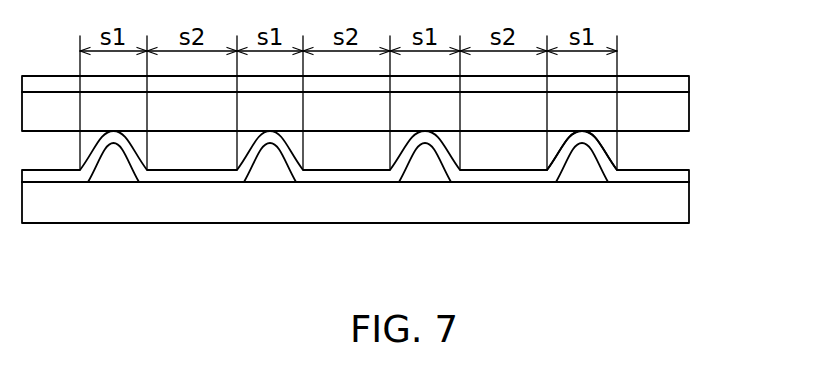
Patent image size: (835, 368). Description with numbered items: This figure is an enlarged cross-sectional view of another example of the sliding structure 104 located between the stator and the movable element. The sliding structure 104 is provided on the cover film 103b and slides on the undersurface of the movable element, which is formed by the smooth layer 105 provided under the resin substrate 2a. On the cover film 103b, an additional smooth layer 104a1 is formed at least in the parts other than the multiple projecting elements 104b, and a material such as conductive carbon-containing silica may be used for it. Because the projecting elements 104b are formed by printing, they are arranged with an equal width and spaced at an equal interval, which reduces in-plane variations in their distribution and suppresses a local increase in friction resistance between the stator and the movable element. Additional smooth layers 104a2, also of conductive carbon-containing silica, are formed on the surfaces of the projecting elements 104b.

The resin substrate 2a is at (682, 82).
The smooth layer 105 is at (680, 108).
The sliding structure 104 is at (632, 153).
The additional smooth layer 104a1 is at (682, 170).
The cover film 103b is at (682, 198).
The projecting elements 104b is at (582, 163).
The additional smooth layers 104a2 is at (563, 148).